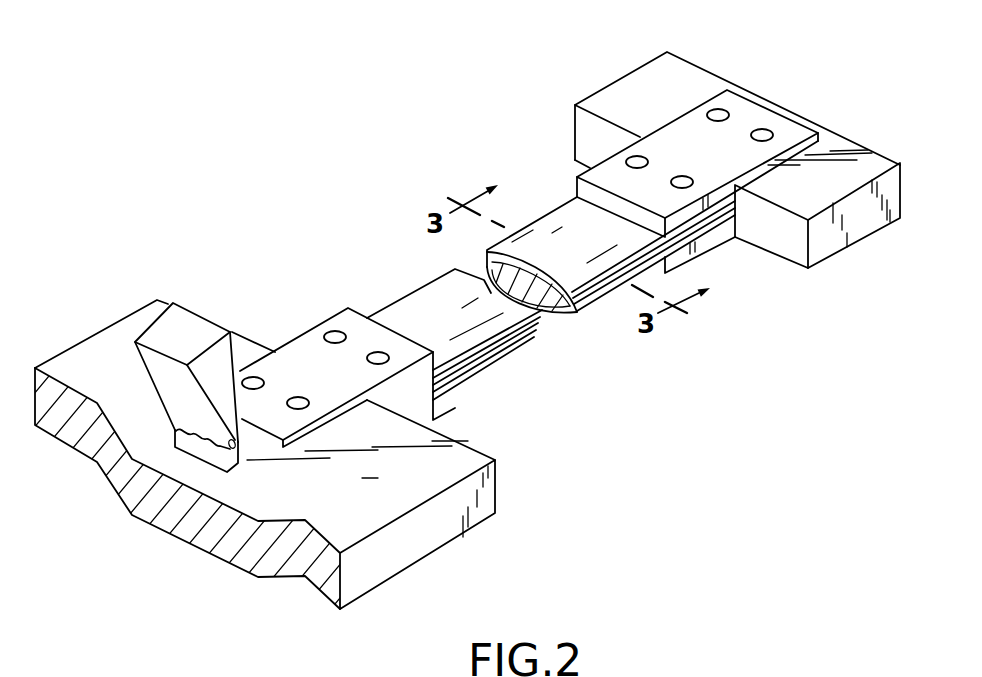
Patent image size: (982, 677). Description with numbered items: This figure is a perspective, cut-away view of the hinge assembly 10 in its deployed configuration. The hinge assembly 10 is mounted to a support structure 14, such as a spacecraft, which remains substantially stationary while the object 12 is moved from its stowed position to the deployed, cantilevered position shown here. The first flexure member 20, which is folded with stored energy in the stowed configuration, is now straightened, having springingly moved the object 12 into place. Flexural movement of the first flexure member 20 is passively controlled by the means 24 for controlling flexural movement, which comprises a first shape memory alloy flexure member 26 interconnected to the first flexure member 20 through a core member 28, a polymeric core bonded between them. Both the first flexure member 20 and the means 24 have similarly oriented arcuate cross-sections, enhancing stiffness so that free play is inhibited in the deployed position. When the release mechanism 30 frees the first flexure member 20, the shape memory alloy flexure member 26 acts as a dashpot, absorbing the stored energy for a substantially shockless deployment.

The hinge assembly 10 is at (675, 402).
The object 12 is at (827, 200).
The support structure 14 is at (385, 507).
The first flexure member 20 is at (498, 376).
The means for controlling flexural movement of the first flexure member 24 is at (398, 291).
The first shape memory alloy flexure member 26 is at (445, 328).
The core member 28 is at (577, 312).
The release mechanism 30 is at (134, 342).